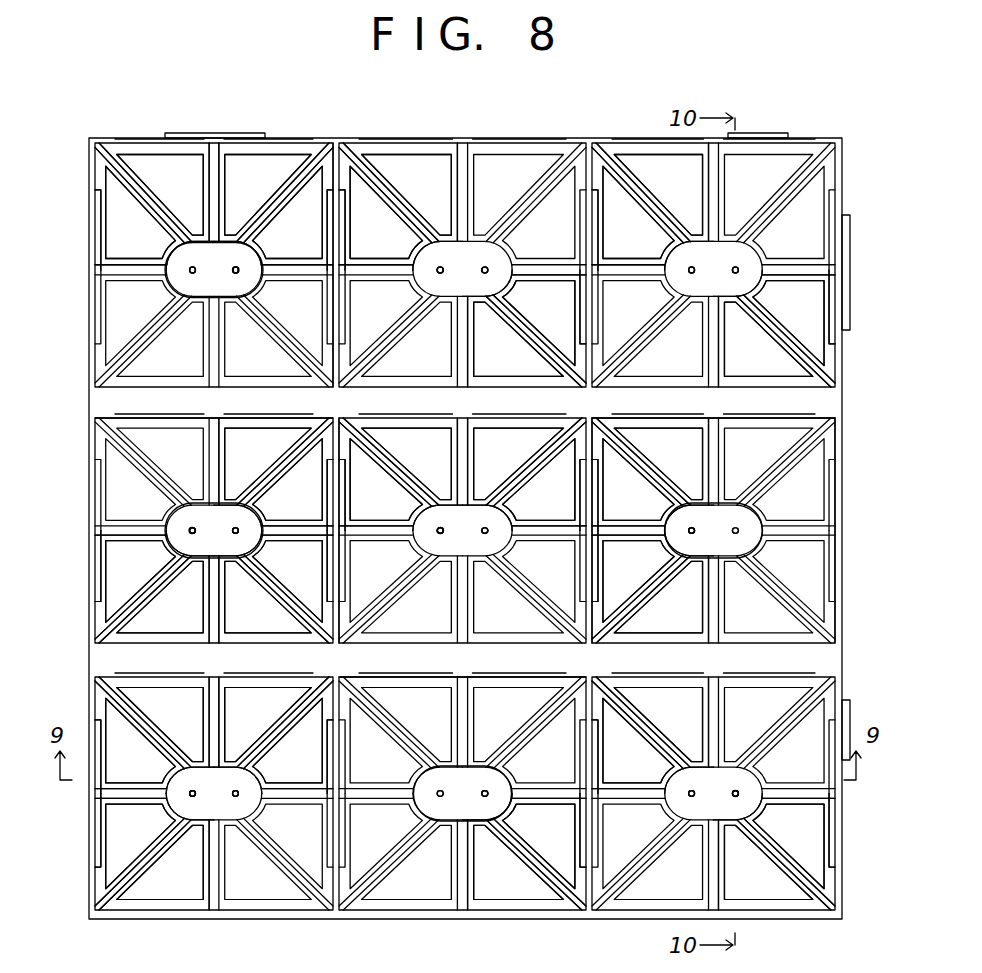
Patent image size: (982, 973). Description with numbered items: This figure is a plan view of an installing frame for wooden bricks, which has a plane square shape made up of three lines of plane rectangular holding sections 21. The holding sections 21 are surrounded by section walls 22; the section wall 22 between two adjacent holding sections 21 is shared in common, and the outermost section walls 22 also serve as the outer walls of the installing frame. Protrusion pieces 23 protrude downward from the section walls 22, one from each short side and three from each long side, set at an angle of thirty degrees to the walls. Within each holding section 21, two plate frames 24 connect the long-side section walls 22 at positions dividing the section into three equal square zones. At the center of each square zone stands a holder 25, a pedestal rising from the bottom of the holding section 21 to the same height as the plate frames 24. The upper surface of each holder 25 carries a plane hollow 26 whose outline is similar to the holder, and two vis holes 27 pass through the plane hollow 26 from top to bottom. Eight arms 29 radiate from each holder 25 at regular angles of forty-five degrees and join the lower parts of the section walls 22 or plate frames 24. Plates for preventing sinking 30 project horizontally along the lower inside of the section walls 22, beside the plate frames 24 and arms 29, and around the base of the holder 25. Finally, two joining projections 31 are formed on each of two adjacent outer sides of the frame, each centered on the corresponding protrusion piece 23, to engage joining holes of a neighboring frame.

The holding section 21 is at (515, 180).
The section wall 22 is at (334, 140).
The protrusion piece 23 is at (200, 148).
The plate frame 24 is at (255, 414).
The holder 25 is at (482, 315).
The plane hollow 26 is at (232, 285).
The vis hole 27 is at (243, 266).
The arm 29 is at (725, 355).
The plate for preventing sinking 30 is at (285, 200).
The joining projection 31 is at (182, 135).